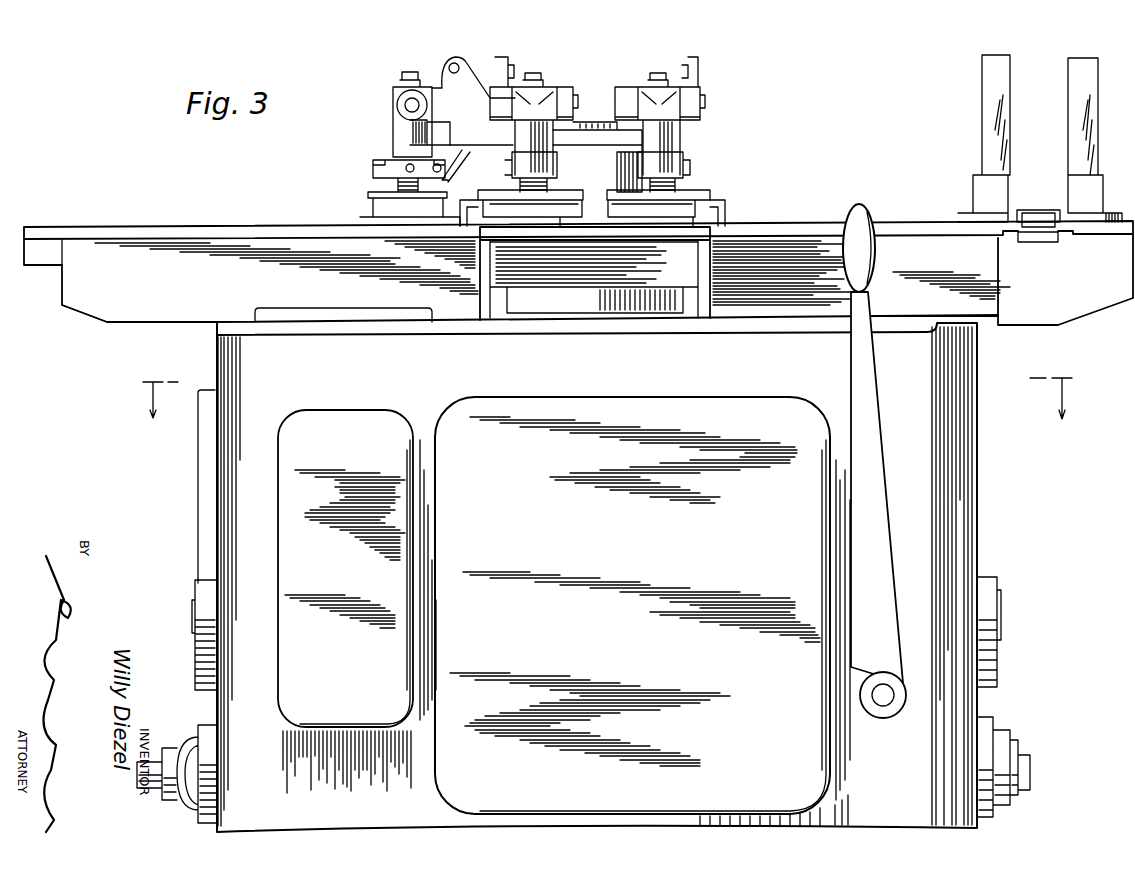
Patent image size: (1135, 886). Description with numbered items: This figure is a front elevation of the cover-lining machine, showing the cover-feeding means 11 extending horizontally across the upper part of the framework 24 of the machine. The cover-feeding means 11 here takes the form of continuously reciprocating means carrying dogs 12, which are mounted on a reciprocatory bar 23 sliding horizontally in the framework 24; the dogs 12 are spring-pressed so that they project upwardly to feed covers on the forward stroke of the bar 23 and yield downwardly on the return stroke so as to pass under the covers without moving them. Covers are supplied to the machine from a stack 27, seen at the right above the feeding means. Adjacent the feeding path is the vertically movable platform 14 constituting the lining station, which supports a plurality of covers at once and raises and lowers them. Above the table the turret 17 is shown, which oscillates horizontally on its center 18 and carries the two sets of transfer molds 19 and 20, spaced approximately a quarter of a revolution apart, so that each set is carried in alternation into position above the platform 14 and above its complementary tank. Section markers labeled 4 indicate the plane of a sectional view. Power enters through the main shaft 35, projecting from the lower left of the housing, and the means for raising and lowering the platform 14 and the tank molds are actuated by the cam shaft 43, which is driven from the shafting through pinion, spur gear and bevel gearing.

The section line 4- 4 is at (615, 407).
The cover-feeding means 11 is at (32, 267).
The dogs 12 is at (875, 428).
The vertically movable platform 14 is at (718, 230).
The turret 17 is at (467, 161).
The center 18 is at (587, 116).
The set of transfer molds 19 is at (362, 192).
The set of transfer molds 20 is at (597, 176).
The reciprocatory bar 23 is at (55, 264).
The framework 24 is at (188, 322).
The stack 27 is at (1040, 148).
The main shaft 35 is at (148, 763).
The cam shaft 43 is at (192, 612).